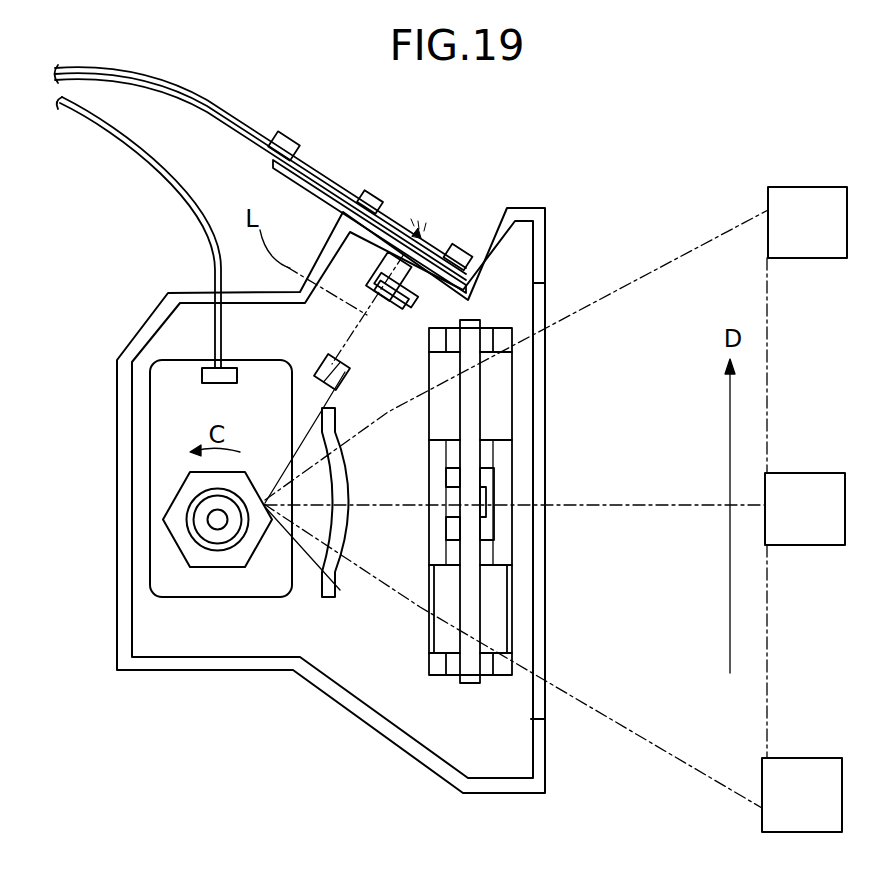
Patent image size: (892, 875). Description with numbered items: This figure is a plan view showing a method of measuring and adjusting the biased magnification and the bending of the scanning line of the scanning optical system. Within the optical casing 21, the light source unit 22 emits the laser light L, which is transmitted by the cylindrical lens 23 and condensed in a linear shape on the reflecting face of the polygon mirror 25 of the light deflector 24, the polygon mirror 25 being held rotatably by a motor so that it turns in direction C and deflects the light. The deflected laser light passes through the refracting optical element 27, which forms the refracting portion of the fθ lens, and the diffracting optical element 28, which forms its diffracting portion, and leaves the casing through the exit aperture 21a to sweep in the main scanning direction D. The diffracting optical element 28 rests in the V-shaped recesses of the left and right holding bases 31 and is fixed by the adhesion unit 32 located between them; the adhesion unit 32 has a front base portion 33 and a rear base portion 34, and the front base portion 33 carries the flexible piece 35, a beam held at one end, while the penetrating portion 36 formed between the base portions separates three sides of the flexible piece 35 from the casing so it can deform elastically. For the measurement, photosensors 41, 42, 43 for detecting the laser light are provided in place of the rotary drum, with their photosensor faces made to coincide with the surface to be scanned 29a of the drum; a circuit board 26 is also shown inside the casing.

The optical casing 21 is at (531, 207).
The exit aperture 21a is at (535, 716).
The light source unit 22 is at (362, 303).
The cylindrical lens 23 is at (325, 352).
The light deflector 24 is at (162, 496).
The polygon mirror 25 is at (172, 548).
The circuit board 26 is at (150, 400).
The refracting optical element 27 is at (322, 600).
The diffracting optical element 28 is at (465, 684).
The surface to be scanned 29a is at (762, 735).
The holding base 31 is at (512, 347).
The adhesion unit 32 is at (524, 492).
The front base portion 33 is at (432, 540).
The rear base portion 34 is at (503, 532).
The flexible piece 35 is at (490, 512).
The penetrating portion 36 is at (492, 480).
The photosensor 41 is at (788, 770).
The photosensor 42 is at (792, 482).
The photosensor 43 is at (792, 207).